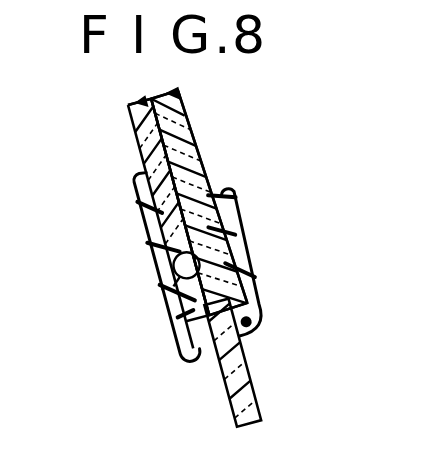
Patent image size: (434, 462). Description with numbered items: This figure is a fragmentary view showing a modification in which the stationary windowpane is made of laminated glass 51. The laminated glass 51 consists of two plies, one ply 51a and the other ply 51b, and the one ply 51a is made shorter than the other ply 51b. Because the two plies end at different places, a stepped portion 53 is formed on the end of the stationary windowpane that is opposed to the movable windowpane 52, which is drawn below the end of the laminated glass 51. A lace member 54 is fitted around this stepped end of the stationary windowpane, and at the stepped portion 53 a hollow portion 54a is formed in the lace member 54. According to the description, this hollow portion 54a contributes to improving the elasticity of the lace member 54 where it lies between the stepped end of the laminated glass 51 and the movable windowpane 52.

The laminated glass 51 is at (183, 104).
The ply 51a is at (136, 132).
The other ply 51b is at (200, 158).
The movable windowpane 52 is at (255, 404).
The stepped portion 53 is at (157, 248).
The lace member 54 is at (252, 242).
The hollow portion 54a is at (162, 288).